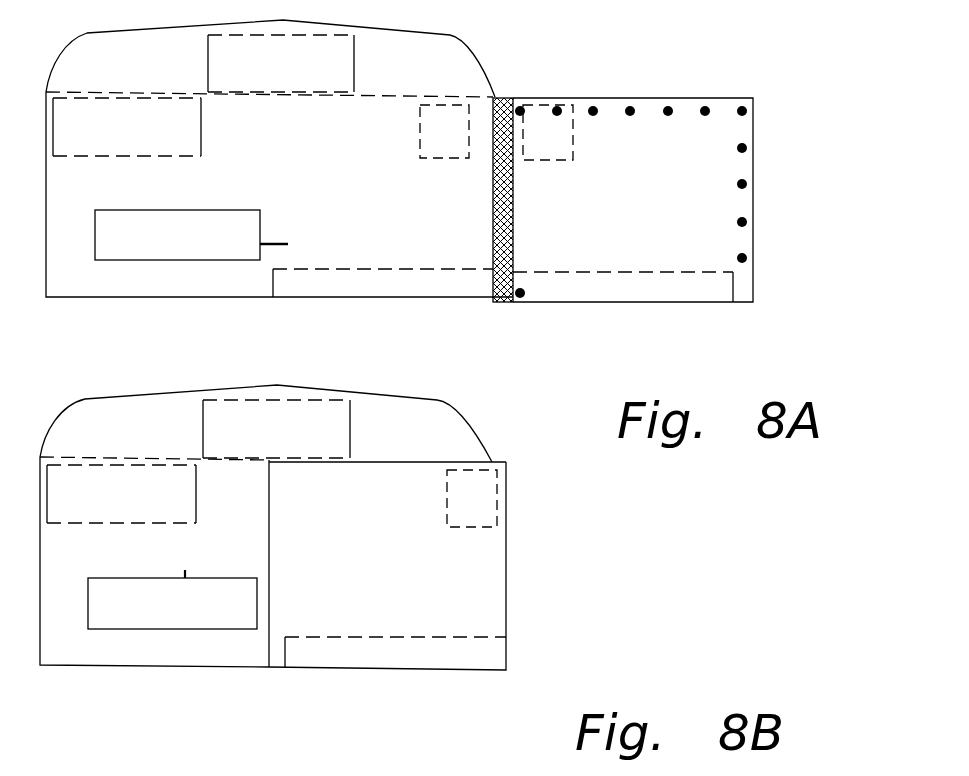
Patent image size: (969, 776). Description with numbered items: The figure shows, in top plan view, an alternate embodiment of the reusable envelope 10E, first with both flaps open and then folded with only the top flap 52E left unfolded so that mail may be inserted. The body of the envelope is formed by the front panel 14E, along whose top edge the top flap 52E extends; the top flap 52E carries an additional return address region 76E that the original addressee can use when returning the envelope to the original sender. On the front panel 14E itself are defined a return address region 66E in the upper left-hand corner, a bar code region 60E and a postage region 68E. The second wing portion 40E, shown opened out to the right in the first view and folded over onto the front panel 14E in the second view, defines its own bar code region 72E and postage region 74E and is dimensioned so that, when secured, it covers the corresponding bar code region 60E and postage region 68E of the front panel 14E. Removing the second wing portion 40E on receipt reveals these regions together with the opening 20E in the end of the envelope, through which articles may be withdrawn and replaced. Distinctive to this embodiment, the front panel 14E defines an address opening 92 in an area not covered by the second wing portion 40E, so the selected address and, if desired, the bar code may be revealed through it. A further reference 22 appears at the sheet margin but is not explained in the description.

In FIG. 8A, the reusable envelope 10E is at (549, 44).
In FIG. 8B, the reusable envelope 10E is at (566, 528).
In FIG. 8A, the front panel 14E is at (382, 212).
In FIG. 8B, the front panel 14E is at (154, 566).
In FIG. 8A, the opening 20E is at (550, 234).
In FIG. 8B, the envelope 22 is at (283, 775).
In FIG. 8A, the second wing portion 40E is at (665, 218).
In FIG. 8B, the second wing portion 40E is at (407, 538).
In FIG. 8A, the top flap 52E is at (442, 85).
In FIG. 8B, the top flap 52E is at (432, 443).
In FIG. 8A, the bar code region 60E is at (409, 291).
In FIG. 8A, the return address region 66E is at (131, 136).
In FIG. 8B, the return address region 66E is at (139, 506).
In FIG. 8A, the postage region 68E is at (470, 145).
In FIG. 8A, the bar code region 72E is at (635, 300).
In FIG. 8B, the bar code region 72E is at (419, 665).
In FIG. 8A, the postage region 74E is at (568, 146).
In FIG. 8B, the postage region 74E is at (492, 514).
In FIG. 8A, the additional return address region 76E is at (285, 72).
In FIG. 8B, the additional return address region 76E is at (304, 440).
In FIG. 8A, the address opening 92 is at (288, 244).
In FIG. 8B, the address opening 92 is at (185, 570).